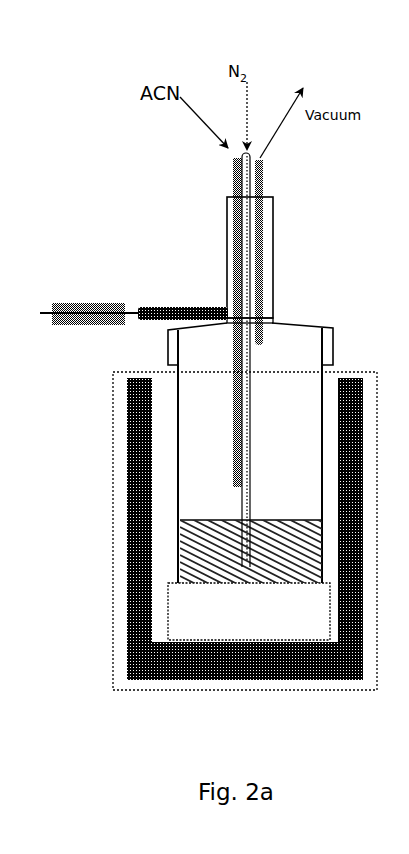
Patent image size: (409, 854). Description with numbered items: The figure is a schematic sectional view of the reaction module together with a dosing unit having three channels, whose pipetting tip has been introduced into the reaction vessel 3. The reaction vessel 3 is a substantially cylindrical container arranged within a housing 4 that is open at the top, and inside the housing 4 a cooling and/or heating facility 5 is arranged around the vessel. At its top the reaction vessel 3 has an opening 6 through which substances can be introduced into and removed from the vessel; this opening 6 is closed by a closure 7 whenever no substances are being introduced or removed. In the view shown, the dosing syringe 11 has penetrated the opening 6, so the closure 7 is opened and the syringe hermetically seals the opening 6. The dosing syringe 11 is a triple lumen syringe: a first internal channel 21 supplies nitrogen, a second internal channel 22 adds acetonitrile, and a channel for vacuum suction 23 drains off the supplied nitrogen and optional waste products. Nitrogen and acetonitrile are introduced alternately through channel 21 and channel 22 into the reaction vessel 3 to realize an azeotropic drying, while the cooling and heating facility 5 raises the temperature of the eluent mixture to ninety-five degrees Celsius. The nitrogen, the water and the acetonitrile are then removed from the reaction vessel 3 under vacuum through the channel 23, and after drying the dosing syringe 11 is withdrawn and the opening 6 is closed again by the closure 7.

The reaction vessel 3 is at (327, 385).
The housing 4 is at (375, 553).
The cooling and/or heating facility 5 is at (313, 665).
The opening of the reaction vessel 6 is at (267, 323).
The closure of the reaction vessel 7 is at (190, 305).
The dosing syringe 11 is at (258, 241).
The first internal channel 21 is at (235, 157).
The second internal channel 22 is at (235, 183).
The channel for vacuum suction 23 is at (265, 185).